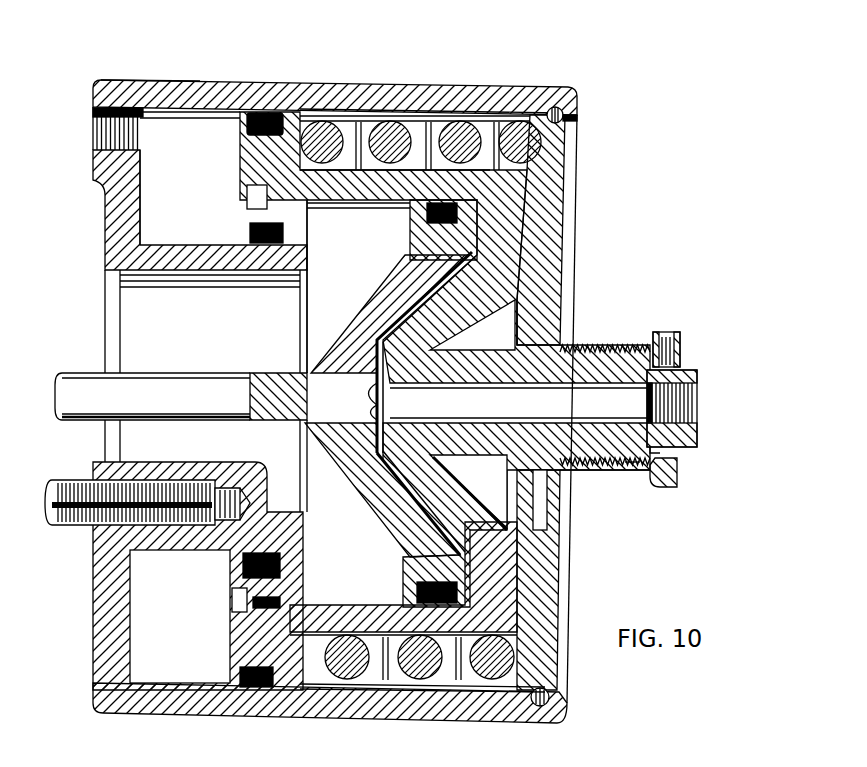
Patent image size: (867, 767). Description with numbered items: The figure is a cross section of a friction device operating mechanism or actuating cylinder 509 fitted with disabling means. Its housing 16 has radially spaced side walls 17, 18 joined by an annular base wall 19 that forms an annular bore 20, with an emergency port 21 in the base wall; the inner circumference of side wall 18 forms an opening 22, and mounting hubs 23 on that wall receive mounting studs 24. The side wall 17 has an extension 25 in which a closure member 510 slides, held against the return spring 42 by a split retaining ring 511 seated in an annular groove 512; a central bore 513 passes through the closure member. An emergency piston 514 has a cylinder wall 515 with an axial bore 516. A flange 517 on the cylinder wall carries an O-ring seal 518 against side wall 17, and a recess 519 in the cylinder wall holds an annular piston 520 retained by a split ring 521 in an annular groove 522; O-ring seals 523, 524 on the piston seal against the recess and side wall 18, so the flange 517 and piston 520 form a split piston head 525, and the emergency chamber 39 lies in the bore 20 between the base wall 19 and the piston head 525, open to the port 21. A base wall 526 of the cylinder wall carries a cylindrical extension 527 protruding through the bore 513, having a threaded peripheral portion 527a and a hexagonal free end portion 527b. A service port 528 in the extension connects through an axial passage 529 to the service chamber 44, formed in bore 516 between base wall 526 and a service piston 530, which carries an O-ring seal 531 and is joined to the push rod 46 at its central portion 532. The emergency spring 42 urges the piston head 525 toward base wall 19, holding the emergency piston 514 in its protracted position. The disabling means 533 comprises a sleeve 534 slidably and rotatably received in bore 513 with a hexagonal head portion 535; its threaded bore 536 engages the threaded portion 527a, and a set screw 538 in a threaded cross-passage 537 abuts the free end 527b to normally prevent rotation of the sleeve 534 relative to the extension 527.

The actuating cylinder 509 is at (91, 80).
The housing 16 is at (150, 80).
The side wall 17 is at (207, 97).
The O-ring seal 518 is at (268, 112).
The side wall extension 25 is at (395, 92).
The annular groove 512 is at (557, 107).
The retaining ring 511 is at (578, 120).
The closure member 510 is at (555, 185).
The base wall 526 is at (540, 212).
The emergency port 21 is at (95, 150).
The piston head 525 is at (244, 133).
The flange 517 is at (248, 160).
The emergency chamber 39 is at (170, 202).
The base wall 19 is at (108, 218).
The annular bore 20 is at (160, 245).
The cylinder wall 515 is at (378, 182).
The axial bore 516 is at (316, 210).
The O-ring seal 531 is at (428, 228).
The emergency piston 514 is at (335, 284).
The opening 22 is at (152, 270).
The side wall 18 is at (205, 270).
The O-ring seal 524 is at (265, 266).
The cylindrical extension 527 is at (465, 360).
The threaded peripheral portion 527a is at (590, 350).
The cross-passage 537 is at (682, 340).
The set screw 538 is at (682, 355).
The push rod 46 is at (155, 404).
The central portion 532 is at (312, 412).
The axial passage 529 is at (478, 422).
The bore 513 is at (540, 450).
The service port 528 is at (685, 433).
The free end portion 527b is at (692, 452).
The mounting studs 24 is at (60, 480).
The mounting hubs 23 is at (145, 466).
The service chamber 44 is at (440, 505).
The service piston 530 is at (380, 500).
The sleeve 534 is at (592, 465).
The threaded bore 536 is at (632, 465).
The head portion 535 is at (678, 490).
The disabling means 533 is at (599, 503).
The annular piston 520 is at (243, 583).
The retaining ring 521 is at (240, 602).
The annular groove 522 is at (250, 610).
The O-ring seal 523 is at (255, 625).
The recess 519 is at (300, 603).
The emergency spring 42 is at (408, 669).